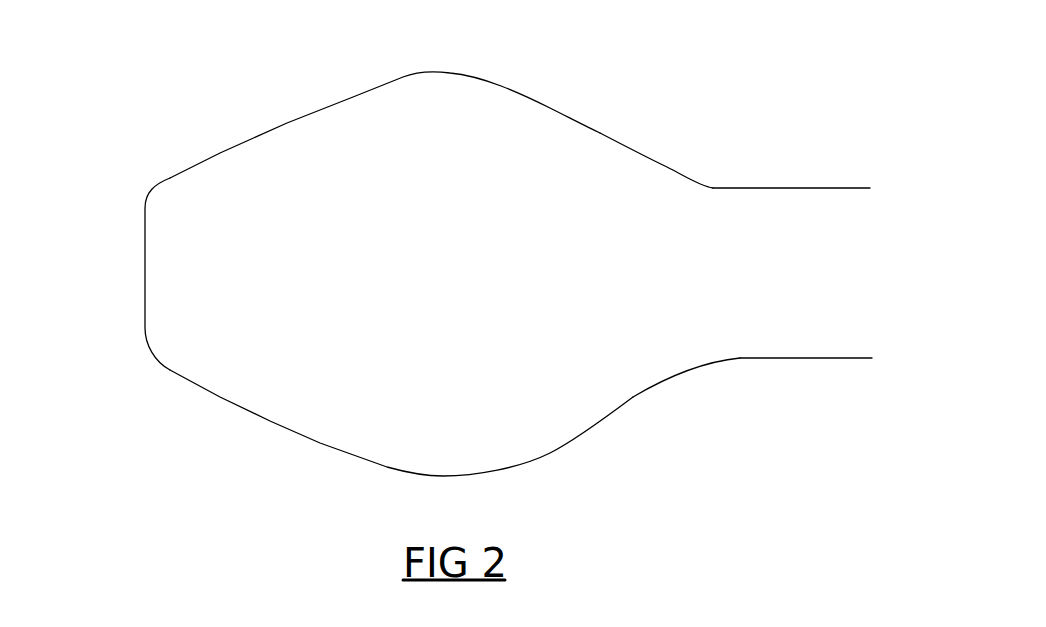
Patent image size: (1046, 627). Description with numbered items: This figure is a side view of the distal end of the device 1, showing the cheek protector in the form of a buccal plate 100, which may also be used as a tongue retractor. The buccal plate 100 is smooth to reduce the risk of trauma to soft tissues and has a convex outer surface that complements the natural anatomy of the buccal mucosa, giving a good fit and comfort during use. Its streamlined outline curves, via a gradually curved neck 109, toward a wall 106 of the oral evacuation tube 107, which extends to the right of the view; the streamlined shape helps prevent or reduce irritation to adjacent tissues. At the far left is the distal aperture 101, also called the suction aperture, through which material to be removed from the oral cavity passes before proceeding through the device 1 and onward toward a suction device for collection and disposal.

The device 1 is at (461, 295).
The buccal plate 100 is at (461, 258).
The distal aperture 101 is at (145, 265).
The wall 106 is at (798, 187).
The oral evacuation tube 107 is at (778, 358).
The curved neck 109 is at (712, 182).